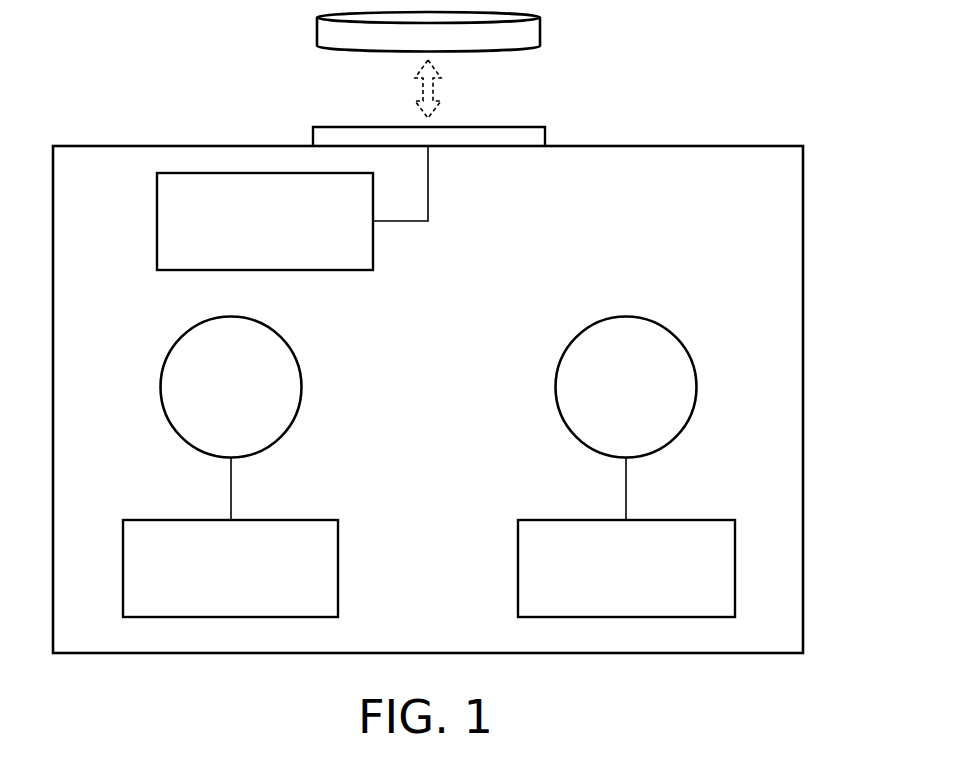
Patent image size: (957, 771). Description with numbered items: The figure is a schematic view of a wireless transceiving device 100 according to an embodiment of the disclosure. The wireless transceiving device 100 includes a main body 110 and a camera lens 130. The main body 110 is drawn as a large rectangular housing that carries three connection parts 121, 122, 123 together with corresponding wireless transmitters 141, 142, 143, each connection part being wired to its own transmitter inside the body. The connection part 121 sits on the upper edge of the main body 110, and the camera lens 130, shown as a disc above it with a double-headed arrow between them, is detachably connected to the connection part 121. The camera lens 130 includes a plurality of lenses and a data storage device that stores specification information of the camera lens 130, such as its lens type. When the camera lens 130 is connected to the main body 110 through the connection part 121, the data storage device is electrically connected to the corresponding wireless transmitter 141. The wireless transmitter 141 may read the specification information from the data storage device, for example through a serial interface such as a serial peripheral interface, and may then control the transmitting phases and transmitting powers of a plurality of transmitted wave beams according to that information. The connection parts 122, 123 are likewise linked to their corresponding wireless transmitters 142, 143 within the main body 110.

The wireless transceiving device 100 is at (875, 690).
The main body 110 is at (805, 398).
The connection part 121 is at (533, 127).
The connection part 122 is at (303, 388).
The connection part 123 is at (554, 388).
The camera lens 130 is at (541, 30).
The wireless transmitter 141 is at (155, 222).
The wireless transmitter 142 is at (339, 569).
The wireless transmitter 143 is at (516, 569).